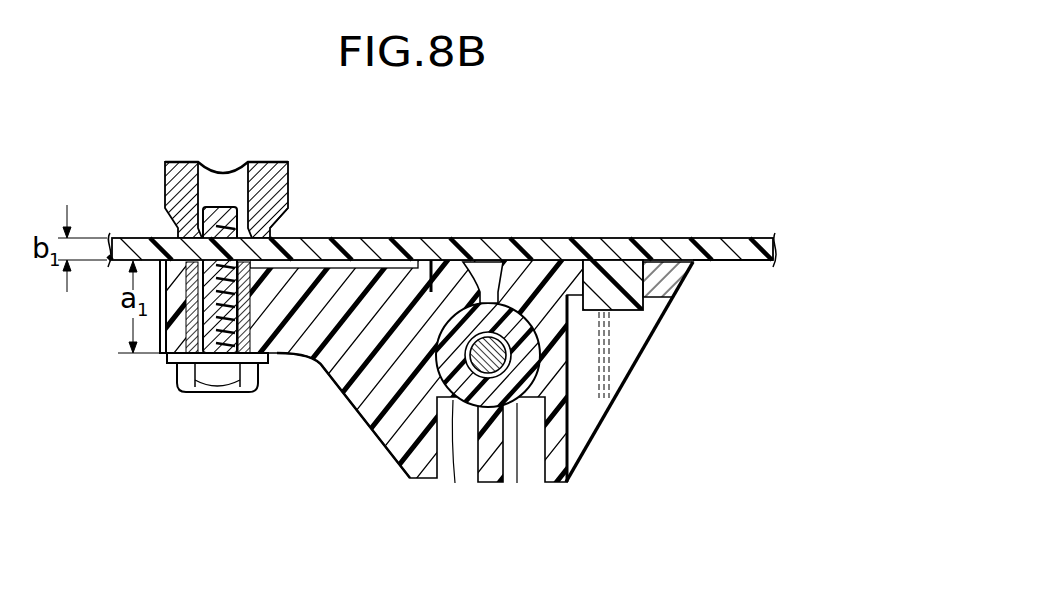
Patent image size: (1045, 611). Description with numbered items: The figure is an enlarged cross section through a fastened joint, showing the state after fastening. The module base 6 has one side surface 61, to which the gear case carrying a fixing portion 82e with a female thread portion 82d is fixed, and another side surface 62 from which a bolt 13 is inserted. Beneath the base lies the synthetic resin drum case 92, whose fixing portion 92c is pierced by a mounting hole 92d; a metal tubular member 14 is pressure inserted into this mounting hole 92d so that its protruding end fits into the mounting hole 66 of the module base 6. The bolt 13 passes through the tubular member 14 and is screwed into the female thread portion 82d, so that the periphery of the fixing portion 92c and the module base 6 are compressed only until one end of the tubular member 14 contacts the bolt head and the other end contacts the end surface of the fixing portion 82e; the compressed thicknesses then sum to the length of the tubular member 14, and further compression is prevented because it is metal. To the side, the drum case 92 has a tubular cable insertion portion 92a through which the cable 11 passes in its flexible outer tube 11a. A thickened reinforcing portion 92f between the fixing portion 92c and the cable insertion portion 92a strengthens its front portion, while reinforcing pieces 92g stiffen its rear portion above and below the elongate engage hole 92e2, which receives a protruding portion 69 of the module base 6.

The module base 6 is at (447, 256).
The one side surface 61 is at (500, 237).
The another side surface 62 is at (727, 263).
The protruding portion 69 is at (623, 313).
The mounting hole 66 is at (272, 231).
The female thread portion 82d is at (222, 207).
The fixing portion 82e is at (165, 185).
The drum case 92 is at (553, 485).
The cable insertion portion 92a is at (568, 390).
The fixing portion 92c is at (158, 330).
The mounting hole 92d is at (251, 377).
The engage hole 92e2 is at (630, 276).
The reinforcing portion 92f is at (368, 430).
The reinforcing piece 92g is at (634, 378).
The cable 11 is at (470, 397).
The outer tube 11a is at (455, 484).
The bolt 13 is at (211, 394).
The tubular member 14 is at (163, 354).